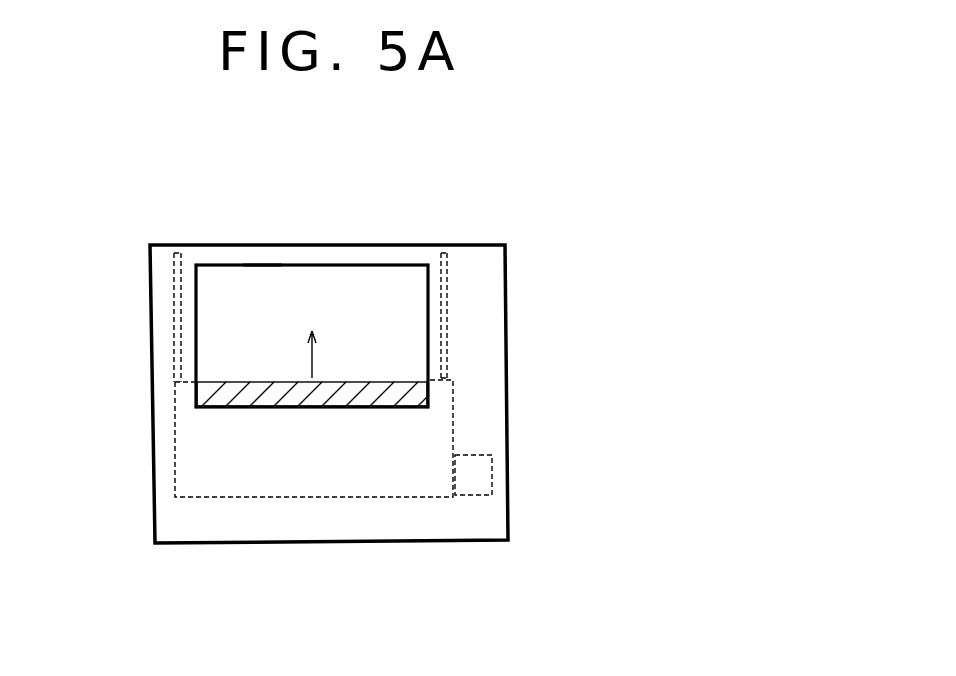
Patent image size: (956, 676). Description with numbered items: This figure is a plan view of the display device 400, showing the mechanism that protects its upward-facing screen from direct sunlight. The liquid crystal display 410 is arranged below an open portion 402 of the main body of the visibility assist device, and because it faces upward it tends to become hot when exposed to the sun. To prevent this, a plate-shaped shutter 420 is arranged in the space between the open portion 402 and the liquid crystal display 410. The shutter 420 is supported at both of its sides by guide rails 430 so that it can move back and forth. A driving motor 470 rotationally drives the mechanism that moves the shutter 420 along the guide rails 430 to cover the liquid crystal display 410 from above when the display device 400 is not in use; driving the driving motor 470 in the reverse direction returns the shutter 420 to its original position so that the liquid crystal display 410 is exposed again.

The display device 400 is at (505, 189).
The open portion 402 is at (243, 270).
The liquid crystal display 410 is at (362, 292).
The shutter 420 is at (410, 392).
The guide rails 430 is at (176, 341).
The driving motor 470 is at (492, 475).